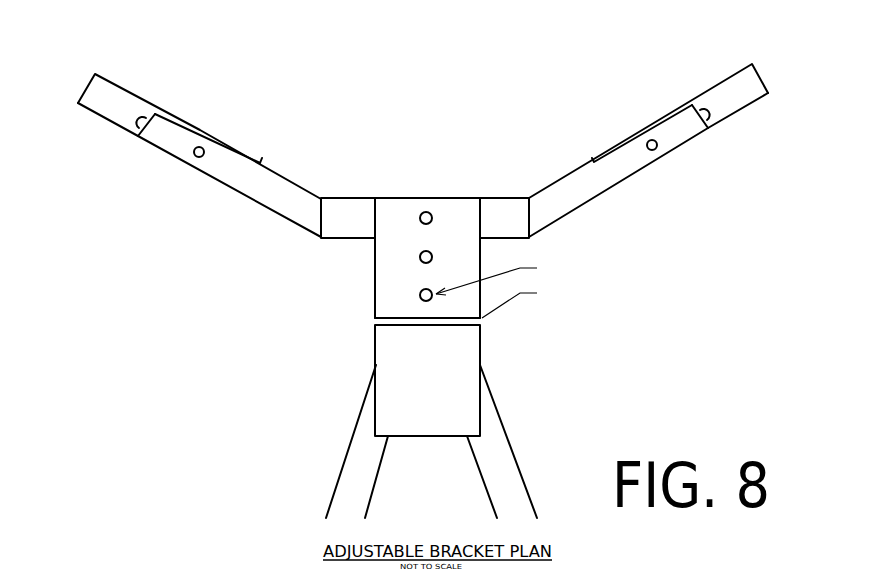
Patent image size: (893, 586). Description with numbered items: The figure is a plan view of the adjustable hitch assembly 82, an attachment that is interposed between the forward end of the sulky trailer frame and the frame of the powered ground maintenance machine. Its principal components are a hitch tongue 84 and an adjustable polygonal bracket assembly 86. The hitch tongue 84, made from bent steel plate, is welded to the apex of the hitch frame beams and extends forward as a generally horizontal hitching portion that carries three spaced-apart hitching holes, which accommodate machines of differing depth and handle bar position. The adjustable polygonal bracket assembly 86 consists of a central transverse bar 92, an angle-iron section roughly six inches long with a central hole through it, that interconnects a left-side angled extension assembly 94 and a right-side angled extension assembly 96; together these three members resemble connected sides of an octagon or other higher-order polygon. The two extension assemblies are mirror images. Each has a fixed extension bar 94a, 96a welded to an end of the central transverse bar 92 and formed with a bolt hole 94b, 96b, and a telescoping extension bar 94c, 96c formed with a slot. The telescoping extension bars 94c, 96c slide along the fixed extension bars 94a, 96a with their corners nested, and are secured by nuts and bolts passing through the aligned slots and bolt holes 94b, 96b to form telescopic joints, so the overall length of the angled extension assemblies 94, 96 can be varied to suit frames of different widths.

The adjustable hitch assembly 82 is at (203, 383).
The hitch tongue 84 is at (460, 357).
The adjustable polygonal bracket assembly 86 is at (318, 110).
The central transverse bar 92 is at (510, 220).
The left-side angled extension assembly 94 is at (192, 82).
The fixed extension bar 94a is at (257, 190).
The bolt hole 94b is at (197, 158).
The telescoping extension bar 94c is at (103, 103).
The right-side angled extension assembly 96 is at (652, 98).
The fixed extension bar 96a is at (597, 183).
The bolt hole 96b is at (657, 147).
The telescoping extension bar 96c is at (748, 92).